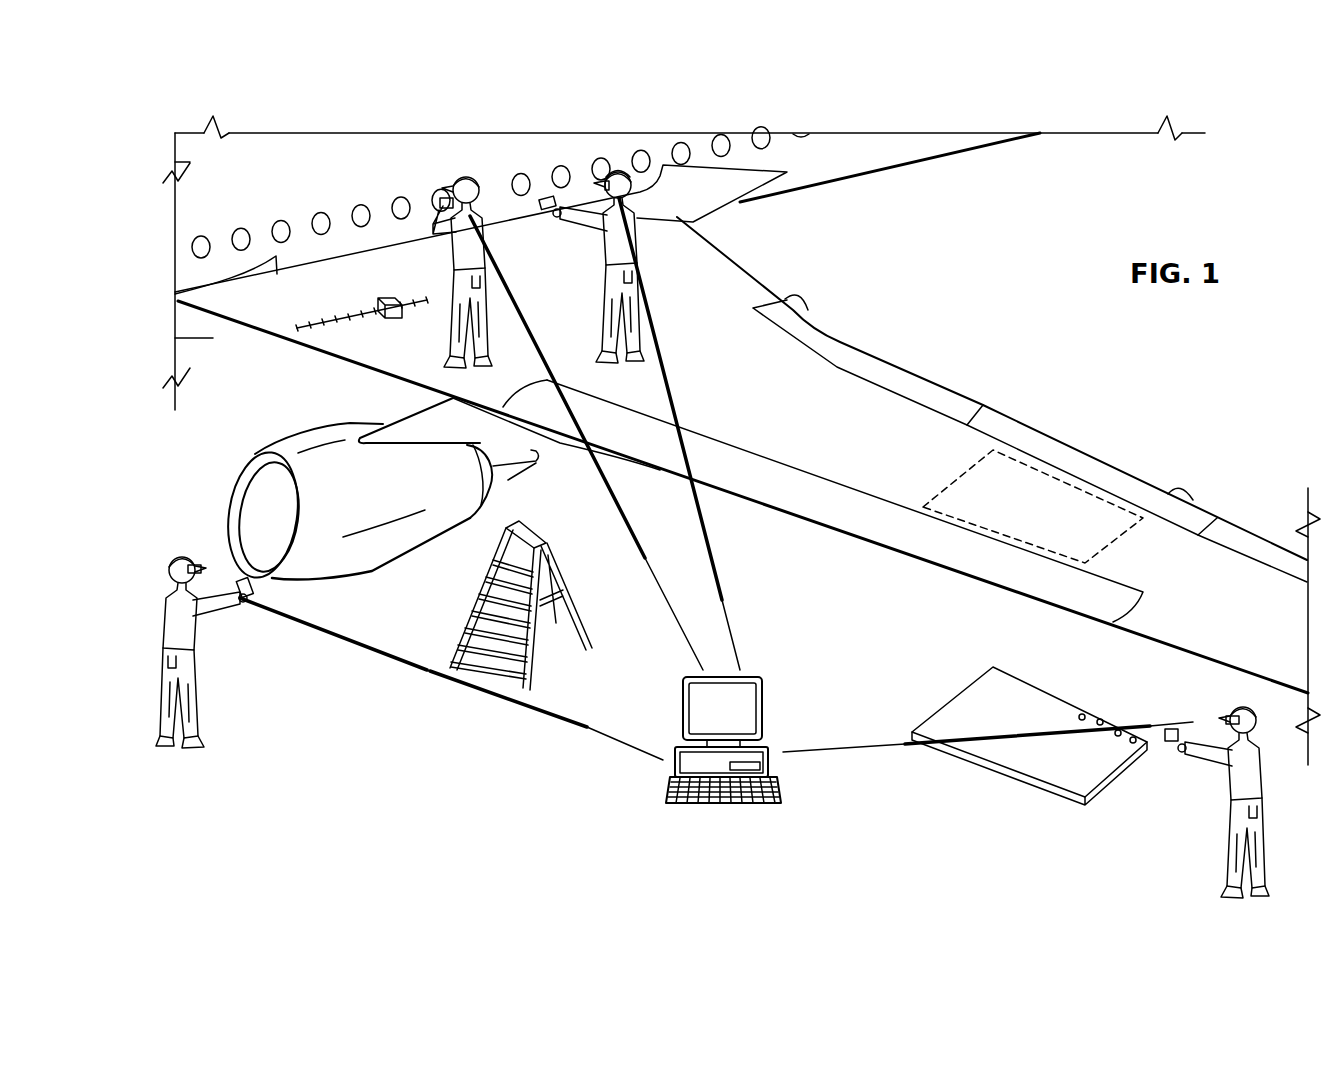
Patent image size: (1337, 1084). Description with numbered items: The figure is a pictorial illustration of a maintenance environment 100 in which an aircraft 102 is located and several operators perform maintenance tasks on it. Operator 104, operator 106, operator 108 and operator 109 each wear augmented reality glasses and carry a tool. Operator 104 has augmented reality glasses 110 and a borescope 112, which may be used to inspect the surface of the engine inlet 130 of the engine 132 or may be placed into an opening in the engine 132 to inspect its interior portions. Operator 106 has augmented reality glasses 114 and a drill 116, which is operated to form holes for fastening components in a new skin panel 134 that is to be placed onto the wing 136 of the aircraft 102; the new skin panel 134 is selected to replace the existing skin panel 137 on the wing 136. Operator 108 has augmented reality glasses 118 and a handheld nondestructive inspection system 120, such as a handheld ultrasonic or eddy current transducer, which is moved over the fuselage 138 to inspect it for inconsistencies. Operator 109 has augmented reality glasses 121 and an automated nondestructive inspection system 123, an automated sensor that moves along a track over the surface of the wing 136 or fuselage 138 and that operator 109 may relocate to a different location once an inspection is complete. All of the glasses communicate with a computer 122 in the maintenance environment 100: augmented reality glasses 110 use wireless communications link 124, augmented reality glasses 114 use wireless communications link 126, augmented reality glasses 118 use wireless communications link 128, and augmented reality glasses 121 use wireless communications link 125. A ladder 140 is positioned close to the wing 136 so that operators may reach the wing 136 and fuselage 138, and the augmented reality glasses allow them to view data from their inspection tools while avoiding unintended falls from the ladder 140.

The maintenance environment 100 is at (1079, 207).
The aircraft 102 is at (770, 196).
The operator 104 is at (190, 668).
The operator 106 is at (1265, 846).
The operator 108 is at (605, 284).
The operator 109 is at (463, 177).
The augmented reality glasses 110 is at (200, 560).
The borescope 112 is at (256, 588).
The augmented reality glasses 114 is at (1222, 728).
The drill 116 is at (1168, 742).
The augmented reality glasses 118 is at (600, 184).
The handheld nondestructive inspection system 120 is at (545, 192).
The augmented reality glasses 121 is at (438, 192).
The computer 122 is at (722, 806).
The automated nondestructive inspection system 123 is at (337, 327).
The wireless communications link 124 is at (480, 695).
The wireless communications link 125 is at (620, 515).
The wireless communications link 126 is at (878, 748).
The wireless communications link 128 is at (713, 552).
The engine inlet 130 is at (240, 488).
The engine 132 is at (388, 563).
The new skin panel 134 is at (950, 700).
The wing 136 is at (863, 540).
The skin panel 137 is at (1063, 497).
The fuselage 138 is at (862, 175).
The ladder 140 is at (573, 597).